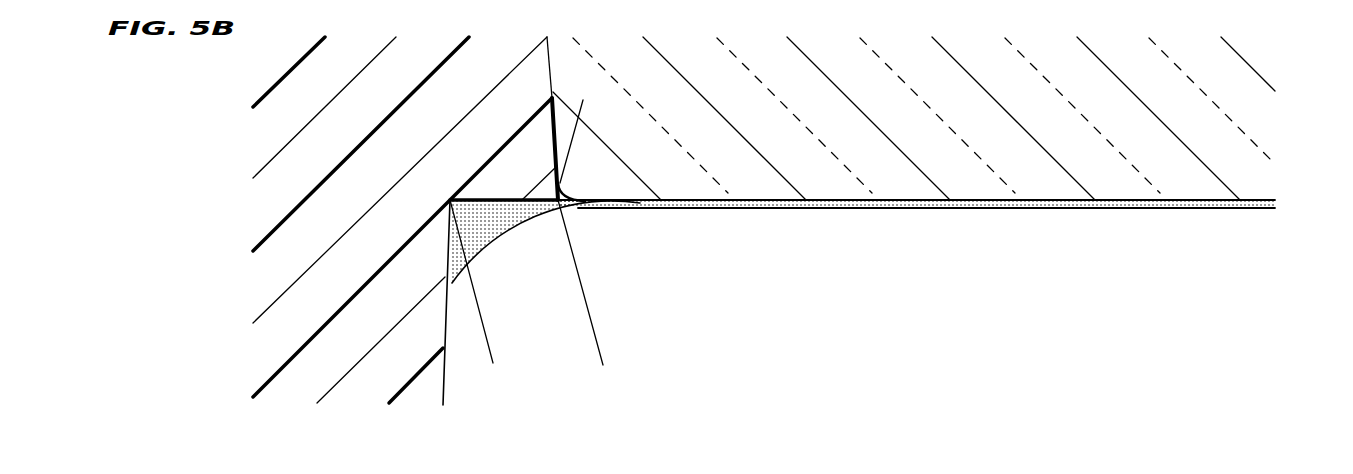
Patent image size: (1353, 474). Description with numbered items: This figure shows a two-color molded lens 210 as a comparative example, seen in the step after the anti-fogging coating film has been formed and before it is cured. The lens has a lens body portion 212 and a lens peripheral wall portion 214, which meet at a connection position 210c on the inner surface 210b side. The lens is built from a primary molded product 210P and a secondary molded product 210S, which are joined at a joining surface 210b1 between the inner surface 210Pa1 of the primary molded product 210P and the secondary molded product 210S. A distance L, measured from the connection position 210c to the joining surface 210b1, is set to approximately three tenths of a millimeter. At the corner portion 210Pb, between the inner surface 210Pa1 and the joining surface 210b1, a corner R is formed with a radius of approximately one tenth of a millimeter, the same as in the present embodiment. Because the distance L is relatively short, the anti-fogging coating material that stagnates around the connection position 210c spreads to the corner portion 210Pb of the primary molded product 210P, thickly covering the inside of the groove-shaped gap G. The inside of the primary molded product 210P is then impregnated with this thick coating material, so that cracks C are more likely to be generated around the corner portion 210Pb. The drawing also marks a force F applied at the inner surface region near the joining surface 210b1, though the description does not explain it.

The lens peripheral wall portion 214 is at (318, 293).
The joining surface 210b1 is at (552, 87).
The secondary molded product 210S is at (452, 370).
The pressing force F is at (548, 113).
The connection position 210c is at (466, 209).
The primary molded product 210P is at (1072, 207).
The inner surface of primary molded product 210Pa1 is at (827, 200).
The inner surface 210b is at (967, 200).
The corner portion 210Pb is at (580, 188).
The corner R is at (571, 184).
The cracks C is at (573, 131).
The groove-shaped gap G is at (562, 203).
The distance L is at (597, 353).
The lens body portion 212 is at (1190, 128).
The two-color molded lens 210 is at (1197, 252).